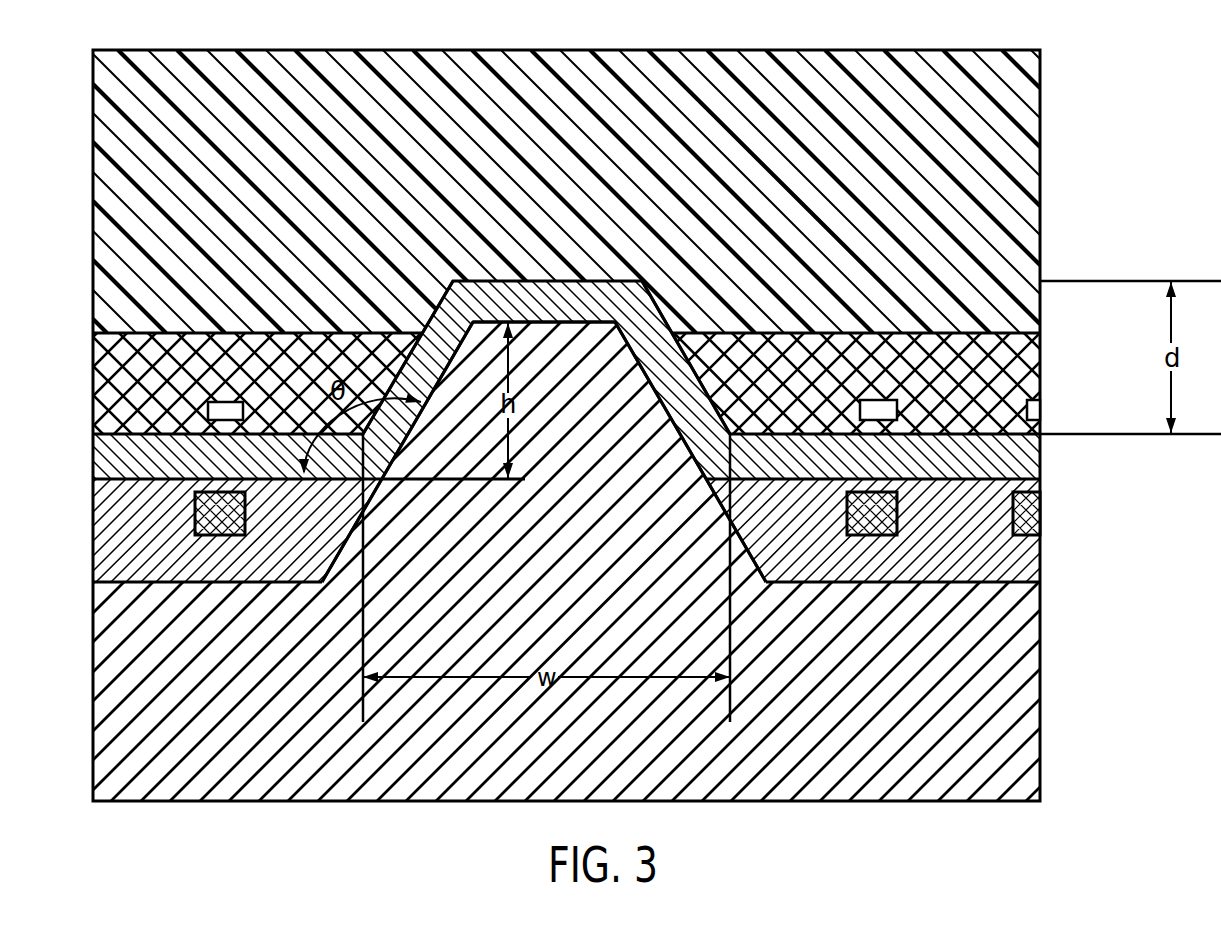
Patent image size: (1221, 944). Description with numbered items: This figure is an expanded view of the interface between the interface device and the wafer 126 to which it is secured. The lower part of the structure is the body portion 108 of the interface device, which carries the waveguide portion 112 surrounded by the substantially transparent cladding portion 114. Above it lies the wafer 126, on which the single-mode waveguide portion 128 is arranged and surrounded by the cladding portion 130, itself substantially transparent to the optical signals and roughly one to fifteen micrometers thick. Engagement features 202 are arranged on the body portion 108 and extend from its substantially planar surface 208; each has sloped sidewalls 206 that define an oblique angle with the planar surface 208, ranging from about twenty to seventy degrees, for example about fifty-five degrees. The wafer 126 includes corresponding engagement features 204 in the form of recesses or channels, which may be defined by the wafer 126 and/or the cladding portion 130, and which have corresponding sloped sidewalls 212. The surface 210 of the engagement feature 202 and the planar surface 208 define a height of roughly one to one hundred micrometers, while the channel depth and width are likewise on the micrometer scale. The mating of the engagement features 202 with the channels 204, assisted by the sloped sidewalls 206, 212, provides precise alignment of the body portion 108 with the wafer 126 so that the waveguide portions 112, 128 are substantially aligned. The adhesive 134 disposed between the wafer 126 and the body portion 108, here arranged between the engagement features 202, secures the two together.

The body portion 108 is at (1030, 700).
The waveguide portion 112 is at (200, 520).
The cladding portion 114 is at (1032, 570).
The wafer 126 is at (1030, 158).
The single-mode waveguide portion 128 is at (222, 401).
The cladding portion 130 is at (1030, 362).
The adhesive 134 is at (1030, 453).
The engagement features 202 is at (581, 401).
The engagement features (channels) 204 is at (522, 342).
The sloped sidewalls 206 is at (407, 437).
The planar surface 208 is at (190, 473).
The surface 210 is at (578, 320).
The sloped sidewalls 212 is at (437, 300).